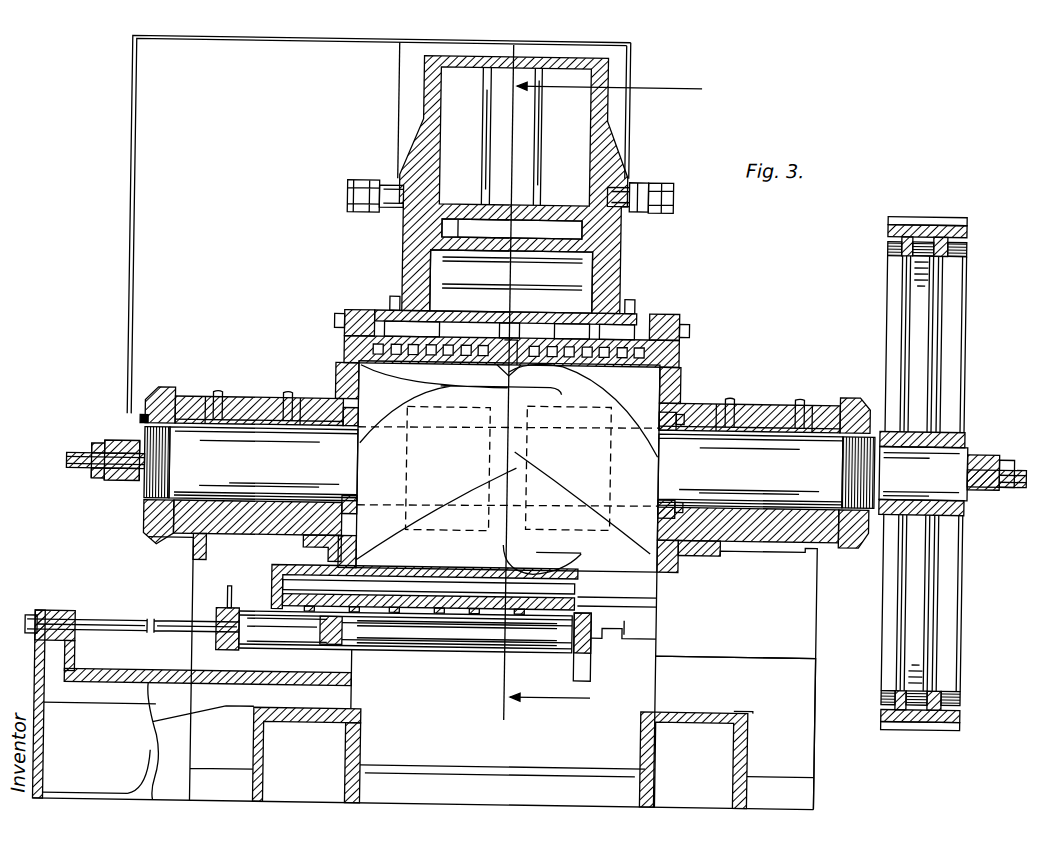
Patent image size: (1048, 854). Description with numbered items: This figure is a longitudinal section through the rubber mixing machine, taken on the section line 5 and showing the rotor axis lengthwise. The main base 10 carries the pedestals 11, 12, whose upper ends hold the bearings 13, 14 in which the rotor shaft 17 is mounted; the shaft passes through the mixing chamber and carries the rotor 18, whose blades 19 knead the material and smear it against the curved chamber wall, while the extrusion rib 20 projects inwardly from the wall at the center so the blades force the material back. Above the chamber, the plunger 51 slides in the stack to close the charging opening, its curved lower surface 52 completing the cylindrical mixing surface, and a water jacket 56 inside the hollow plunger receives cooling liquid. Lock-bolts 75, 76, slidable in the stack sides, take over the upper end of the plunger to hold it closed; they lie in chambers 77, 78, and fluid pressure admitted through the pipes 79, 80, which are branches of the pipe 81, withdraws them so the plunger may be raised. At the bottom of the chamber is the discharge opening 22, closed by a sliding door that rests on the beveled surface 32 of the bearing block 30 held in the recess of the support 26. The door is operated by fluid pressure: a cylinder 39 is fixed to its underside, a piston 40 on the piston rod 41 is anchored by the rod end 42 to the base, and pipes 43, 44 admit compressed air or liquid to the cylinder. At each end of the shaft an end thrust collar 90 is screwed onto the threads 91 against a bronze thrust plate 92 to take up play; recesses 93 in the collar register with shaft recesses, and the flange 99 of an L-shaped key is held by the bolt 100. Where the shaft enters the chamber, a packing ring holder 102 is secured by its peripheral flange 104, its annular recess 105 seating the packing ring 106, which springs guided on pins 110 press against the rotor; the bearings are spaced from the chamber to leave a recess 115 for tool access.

The section line 5- 5 is at (605, 404).
The main base 10 is at (436, 787).
The pedestal 11 is at (781, 620).
The pedestal 12 is at (200, 592).
The bearing 13 is at (772, 401).
The bearing 14 is at (250, 401).
The rotor shaft 17 is at (265, 470).
The rotor 18 is at (463, 469).
The blades 19 is at (380, 387).
The extrusion rib 20 is at (508, 374).
The discharge opening 22 is at (632, 582).
The support 26 is at (621, 640).
The bearing block 30 is at (645, 605).
The beveled surface 32 is at (608, 591).
The cylinder 39 is at (498, 655).
The piston 40 is at (326, 650).
The piston rod 41 is at (146, 627).
The end of piston rod 42 is at (80, 625).
The pipe 43 is at (234, 598).
The pipe 44 is at (586, 680).
The plunger 51 is at (465, 119).
The curved lower surface 52 is at (528, 276).
The water jacket 56 is at (550, 230).
The lock-bolt 75 is at (345, 193).
The lock-bolt 76 is at (670, 196).
The chamber 77 is at (372, 182).
The chamber 78 is at (660, 183).
The pipe 79 is at (394, 90).
The pipe 80 is at (625, 77).
The pipe 81 is at (128, 248).
The end thrust collar 90 is at (158, 396).
The threads 91 is at (145, 485).
The thrust plate 92 is at (180, 401).
The recesses 93 is at (170, 437).
The flange 99 is at (143, 420).
The bolt 100 is at (142, 428).
The packing ring holder 102 is at (668, 430).
The peripheral flange 104 is at (345, 412).
The annular recess 105 is at (659, 508).
The packing ring 106 is at (358, 506).
The pins 110 is at (680, 500).
The recess 115 is at (312, 543).